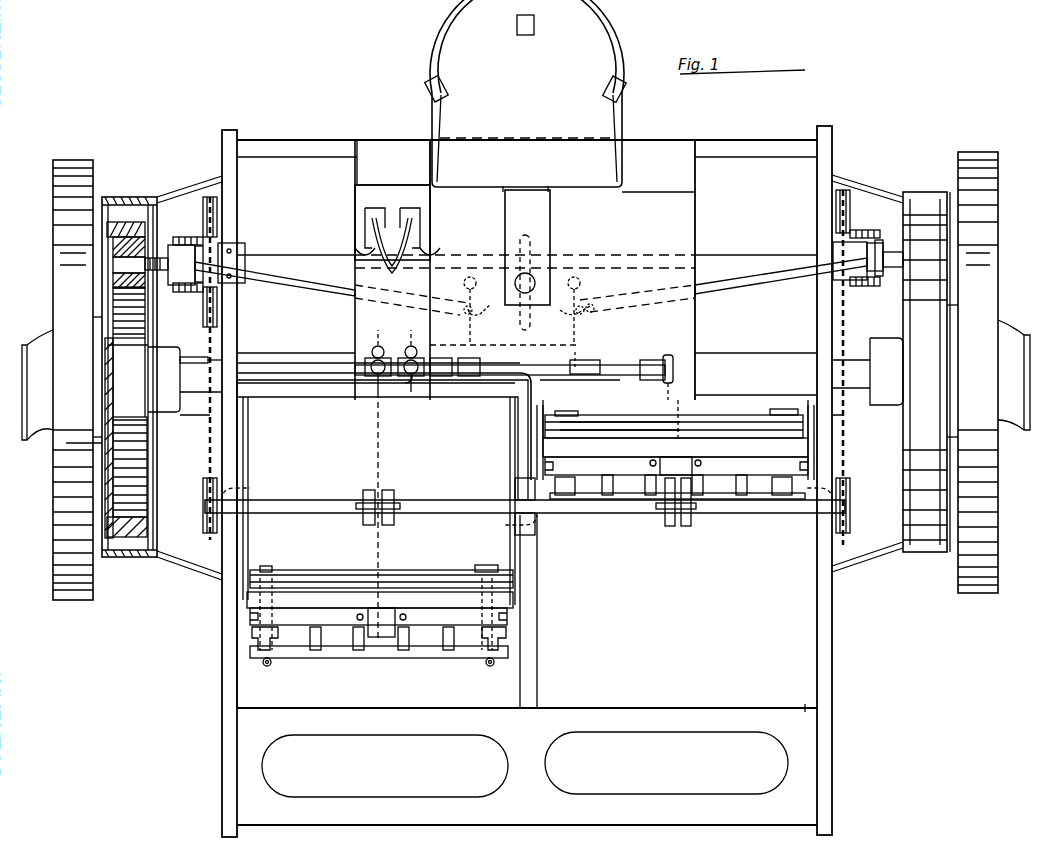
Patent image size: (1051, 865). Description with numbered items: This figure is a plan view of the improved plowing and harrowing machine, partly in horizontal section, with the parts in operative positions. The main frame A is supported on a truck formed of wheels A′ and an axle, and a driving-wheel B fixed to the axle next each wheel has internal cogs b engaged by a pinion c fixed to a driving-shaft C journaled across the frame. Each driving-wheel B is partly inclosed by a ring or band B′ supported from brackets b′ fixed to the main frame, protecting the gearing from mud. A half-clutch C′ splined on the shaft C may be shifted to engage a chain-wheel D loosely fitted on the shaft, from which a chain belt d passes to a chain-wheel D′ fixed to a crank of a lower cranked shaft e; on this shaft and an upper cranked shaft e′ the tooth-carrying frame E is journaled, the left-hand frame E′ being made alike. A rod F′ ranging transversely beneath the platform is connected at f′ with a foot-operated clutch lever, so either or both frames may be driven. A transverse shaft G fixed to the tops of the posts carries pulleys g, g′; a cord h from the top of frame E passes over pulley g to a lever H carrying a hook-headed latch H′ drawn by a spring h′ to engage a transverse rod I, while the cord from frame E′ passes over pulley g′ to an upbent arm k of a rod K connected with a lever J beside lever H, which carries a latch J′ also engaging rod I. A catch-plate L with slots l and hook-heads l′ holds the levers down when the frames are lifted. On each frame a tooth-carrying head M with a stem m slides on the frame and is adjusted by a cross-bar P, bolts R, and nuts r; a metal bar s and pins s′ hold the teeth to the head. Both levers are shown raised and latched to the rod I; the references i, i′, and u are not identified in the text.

The main frame A is at (278, 160).
The supporting wheel A′ is at (52, 300).
The driving-wheel B is at (504, 393).
The ring or band B′ is at (525, 375).
The internal cogs or teeth b is at (81, 435).
The brackets or braces b′ is at (190, 590).
The pinion c is at (112, 285).
The driving-shaft C is at (522, 236).
The half-clutch C′ is at (537, 269).
The chain-wheel D is at (524, 367).
The chain-wheel D′ is at (202, 505).
The chain belt d is at (848, 420).
The lower cranked shaft e is at (511, 437).
The upper cranked shaft e′ is at (410, 580).
The tooth-carrying frame E is at (380, 590).
The left-hand tooth-carrying frame E′ is at (635, 413).
The rod F′ is at (775, 288).
The pivot connection f′ is at (462, 314).
The transverse shaft G is at (340, 506).
The pulley g is at (388, 492).
The pulley g′ is at (668, 518).
The lever H is at (363, 369).
The hook-headed latch H′ is at (352, 398).
The cord or chain h is at (368, 552).
The spring h′ is at (371, 332).
The transverse rod I is at (245, 435).
The rod i is at (669, 419).
The valve stem i′ is at (403, 333).
The lever J is at (411, 354).
The latch J′ is at (414, 398).
The rod K is at (565, 376).
The upwardly-bent arm k is at (671, 367).
The catch-plate L is at (397, 229).
The slot l is at (370, 226).
The hook-head l′ is at (365, 252).
The tooth-carrying head M is at (330, 614).
The stem m is at (536, 546).
The cross-bar P is at (686, 423).
The bolt R is at (524, 523).
The nut r is at (516, 563).
The metal bar s is at (528, 561).
The pin s′ is at (378, 655).
The union u is at (530, 527).